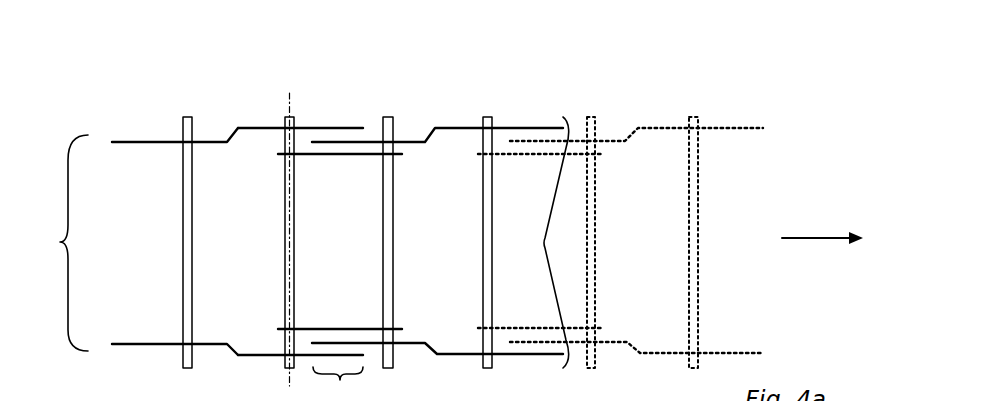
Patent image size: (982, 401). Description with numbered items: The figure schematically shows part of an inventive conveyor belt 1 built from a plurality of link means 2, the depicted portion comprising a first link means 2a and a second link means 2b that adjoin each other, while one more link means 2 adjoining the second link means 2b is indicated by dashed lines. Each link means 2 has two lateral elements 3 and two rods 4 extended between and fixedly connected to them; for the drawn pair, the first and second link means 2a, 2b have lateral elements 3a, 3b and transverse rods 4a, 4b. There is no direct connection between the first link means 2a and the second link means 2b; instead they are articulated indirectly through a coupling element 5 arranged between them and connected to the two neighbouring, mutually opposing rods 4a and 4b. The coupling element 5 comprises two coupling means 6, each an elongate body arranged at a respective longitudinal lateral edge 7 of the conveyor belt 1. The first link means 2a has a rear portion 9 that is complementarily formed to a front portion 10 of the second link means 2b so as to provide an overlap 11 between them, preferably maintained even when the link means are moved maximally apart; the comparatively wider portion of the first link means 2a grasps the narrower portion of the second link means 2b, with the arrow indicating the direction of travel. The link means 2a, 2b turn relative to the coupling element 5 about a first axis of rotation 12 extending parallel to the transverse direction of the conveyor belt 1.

The conveyor belt 1 is at (447, 74).
The link means 2 is at (730, 112).
The first link means 2a is at (223, 112).
The second link means 2b is at (428, 112).
The lateral element 3 is at (745, 128).
The lateral element of first link means 3a is at (137, 142).
The lateral element of second link means 3b is at (432, 144).
The rod 4 is at (698, 243).
The transverse rod of first link means 4a is at (285, 262).
The transverse rod of second link means 4b is at (483, 242).
The coupling element 5 is at (307, 172).
The coupling means 6 is at (345, 157).
The longitudinal lateral edge 7 is at (254, 148).
The rear portion 9 is at (61, 243).
The front portion 10 is at (563, 242).
The overlap 11 is at (338, 384).
The first axis of rotation 12 is at (290, 100).